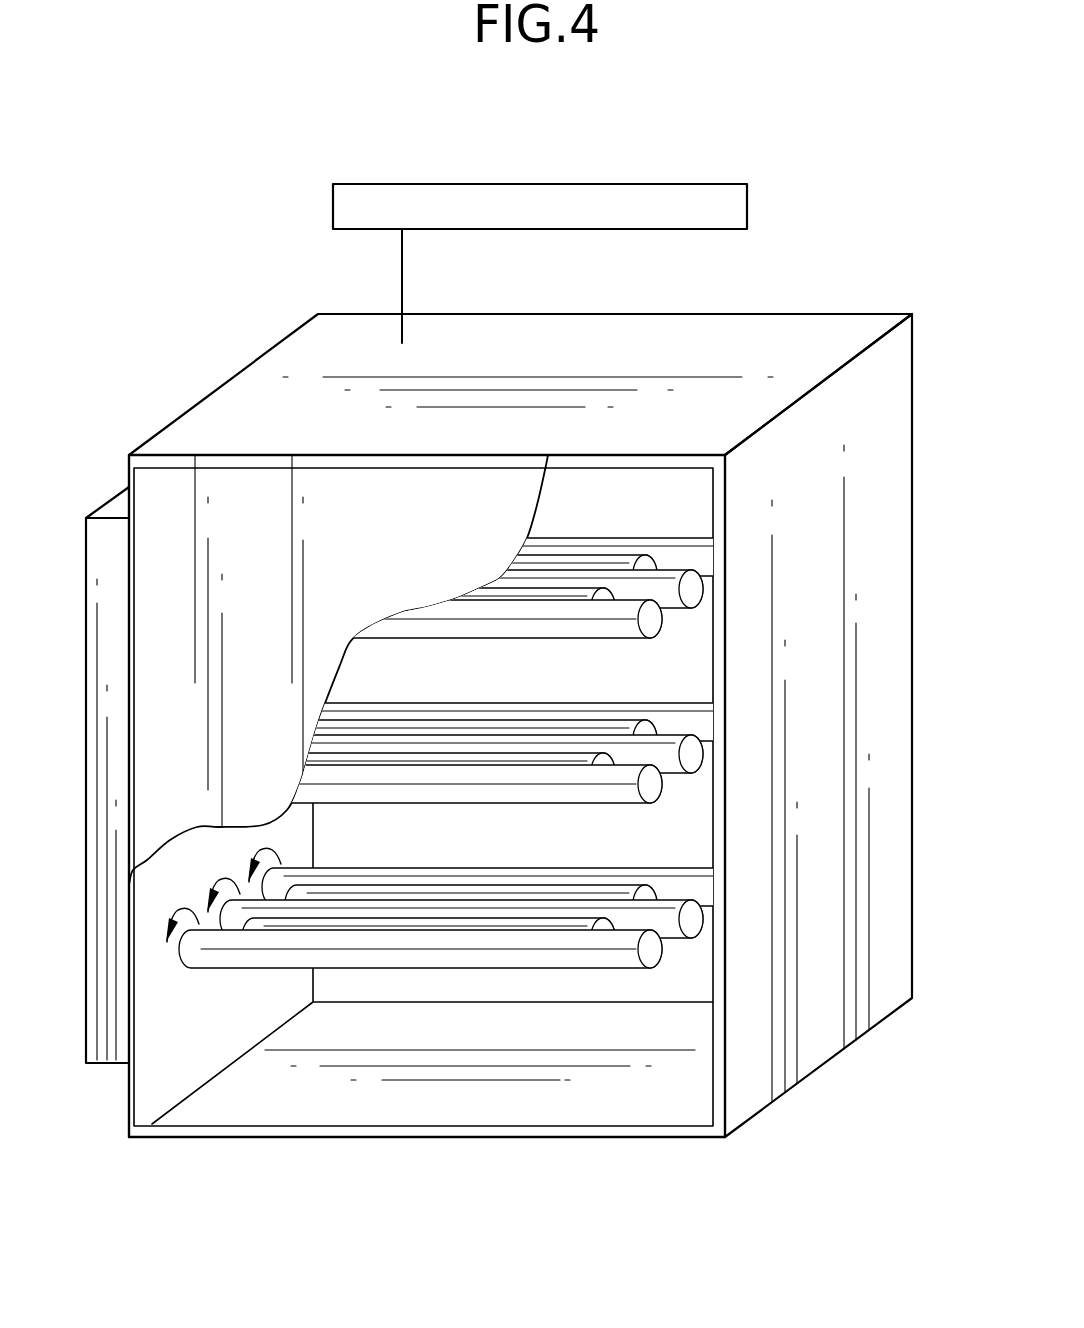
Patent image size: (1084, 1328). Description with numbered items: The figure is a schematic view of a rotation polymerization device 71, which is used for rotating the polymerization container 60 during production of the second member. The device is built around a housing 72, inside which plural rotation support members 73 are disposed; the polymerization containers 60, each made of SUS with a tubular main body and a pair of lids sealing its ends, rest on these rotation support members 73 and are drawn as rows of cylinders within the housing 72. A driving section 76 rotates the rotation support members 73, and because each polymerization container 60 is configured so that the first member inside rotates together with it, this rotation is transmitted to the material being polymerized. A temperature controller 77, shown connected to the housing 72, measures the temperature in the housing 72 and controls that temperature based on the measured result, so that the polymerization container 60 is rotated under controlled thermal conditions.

The polymerization container 60 is at (467, 890).
The rotation polymerization device 71 is at (550, 1265).
The housing 72 is at (822, 357).
The rotation support members 73 is at (228, 917).
The driving section 76 is at (115, 510).
The temperature controller 77 is at (750, 210).